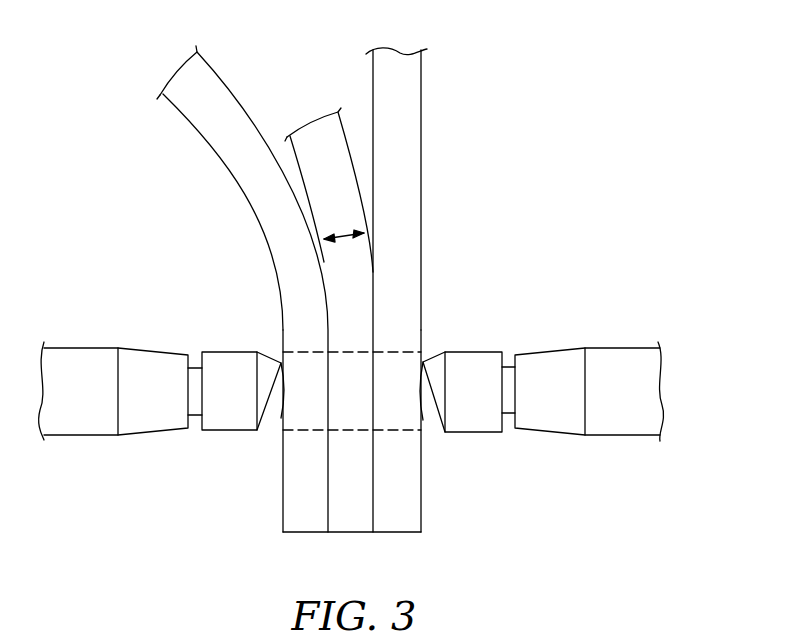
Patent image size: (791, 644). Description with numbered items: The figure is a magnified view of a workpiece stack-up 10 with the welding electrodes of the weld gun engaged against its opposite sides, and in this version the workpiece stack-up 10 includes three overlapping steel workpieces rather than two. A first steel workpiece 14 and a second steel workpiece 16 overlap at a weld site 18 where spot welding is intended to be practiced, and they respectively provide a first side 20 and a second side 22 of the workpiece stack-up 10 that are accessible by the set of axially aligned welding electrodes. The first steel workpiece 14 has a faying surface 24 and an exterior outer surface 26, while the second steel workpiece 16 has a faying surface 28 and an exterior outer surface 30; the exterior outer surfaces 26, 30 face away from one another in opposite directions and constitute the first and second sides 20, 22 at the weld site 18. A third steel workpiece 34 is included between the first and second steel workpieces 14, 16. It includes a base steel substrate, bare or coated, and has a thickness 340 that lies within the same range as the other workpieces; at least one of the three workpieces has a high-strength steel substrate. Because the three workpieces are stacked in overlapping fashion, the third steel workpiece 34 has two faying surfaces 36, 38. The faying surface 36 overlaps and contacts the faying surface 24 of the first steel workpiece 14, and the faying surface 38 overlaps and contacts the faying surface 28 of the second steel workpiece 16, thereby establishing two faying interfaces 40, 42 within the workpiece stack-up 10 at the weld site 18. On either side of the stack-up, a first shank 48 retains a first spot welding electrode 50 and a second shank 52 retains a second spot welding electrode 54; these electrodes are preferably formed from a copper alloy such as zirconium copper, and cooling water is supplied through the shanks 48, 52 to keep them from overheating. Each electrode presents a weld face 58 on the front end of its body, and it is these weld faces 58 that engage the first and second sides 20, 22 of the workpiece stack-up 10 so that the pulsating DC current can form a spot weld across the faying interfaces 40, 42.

The workpiece stack-up 10 is at (277, 505).
The first steel workpiece 14 is at (402, 274).
The second steel workpiece 16 is at (220, 276).
The weld site 18 is at (302, 432).
The first side 20 is at (424, 332).
The second side 22 is at (276, 338).
The faying surface 24 is at (370, 68).
The exterior outer surface 26 is at (422, 173).
The faying surface 28 is at (229, 88).
The exterior outer surface 30 is at (215, 143).
The third steel workpiece 34 is at (315, 156).
The faying surface 36 is at (347, 138).
The faying surface 38 is at (300, 159).
The faying interface 40 is at (375, 397).
The faying interface 42 is at (332, 398).
The first shank 48 is at (507, 378).
The first spot welding electrode 50 is at (473, 440).
The second shank 52 is at (195, 378).
The second spot welding electrode 54 is at (217, 441).
The weld face 58 is at (418, 378).
The thickness 340 is at (343, 233).